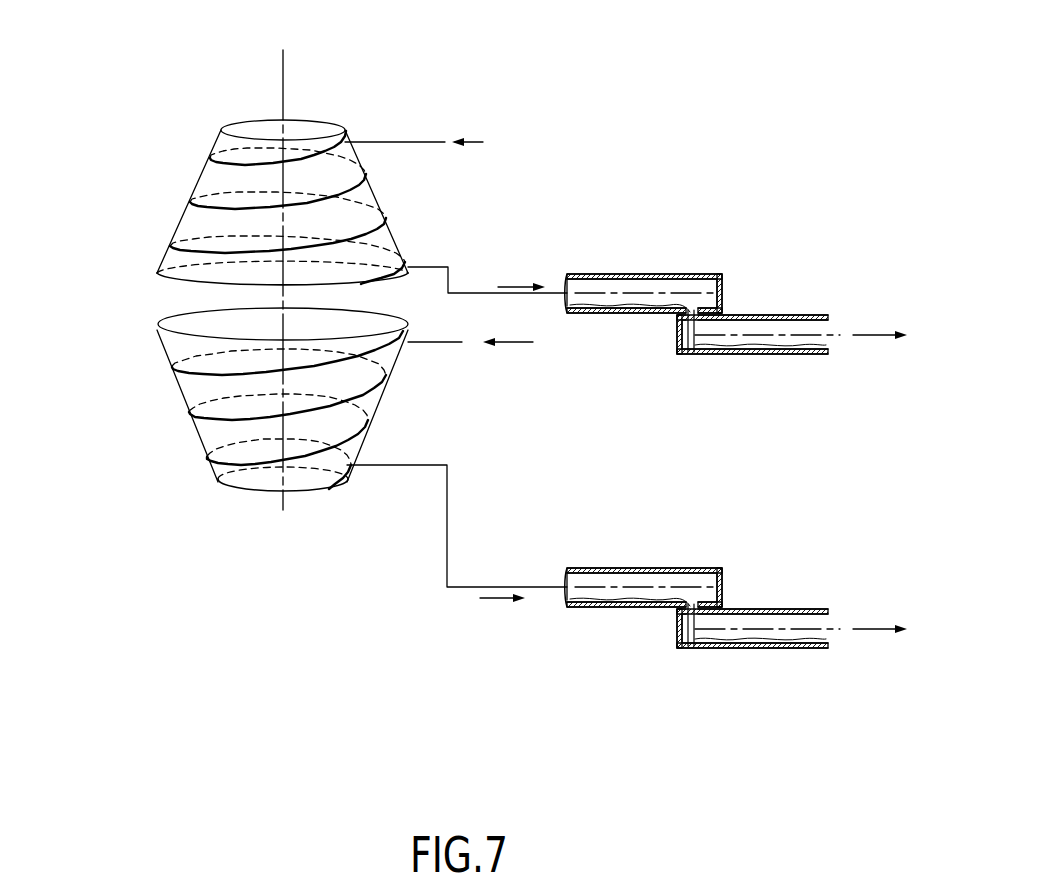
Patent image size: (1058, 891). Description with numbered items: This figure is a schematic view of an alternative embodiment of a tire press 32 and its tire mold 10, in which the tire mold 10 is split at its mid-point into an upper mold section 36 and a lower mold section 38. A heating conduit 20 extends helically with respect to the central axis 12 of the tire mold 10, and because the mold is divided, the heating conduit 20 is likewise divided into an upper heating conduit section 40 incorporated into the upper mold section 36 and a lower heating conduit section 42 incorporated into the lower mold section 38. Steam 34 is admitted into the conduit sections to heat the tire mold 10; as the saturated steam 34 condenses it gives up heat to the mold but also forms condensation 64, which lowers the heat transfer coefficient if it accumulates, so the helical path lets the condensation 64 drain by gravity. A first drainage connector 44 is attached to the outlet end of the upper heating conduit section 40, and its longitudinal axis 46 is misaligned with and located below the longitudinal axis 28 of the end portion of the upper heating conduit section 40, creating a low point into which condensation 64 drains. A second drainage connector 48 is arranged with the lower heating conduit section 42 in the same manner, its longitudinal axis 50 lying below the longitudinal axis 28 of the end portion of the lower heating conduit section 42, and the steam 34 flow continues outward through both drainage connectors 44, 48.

The tire mold 10 is at (307, 322).
The central axis 12 is at (283, 75).
The heating conduit 20 is at (184, 233).
The longitudinal axis 28 is at (607, 293).
The tire press 32 is at (145, 176).
The steam 34 is at (483, 142).
The upper mold section 36 is at (241, 165).
The lower mold section 38 is at (188, 395).
The upper heating conduit section 40 is at (683, 274).
The lower heating conduit section 42 is at (683, 568).
The first drainage connector 44 is at (758, 339).
The longitudinal axis 46 is at (730, 335).
The second drainage connector 48 is at (758, 633).
The longitudinal axis 50 is at (730, 629).
The condensation 64 is at (688, 350).